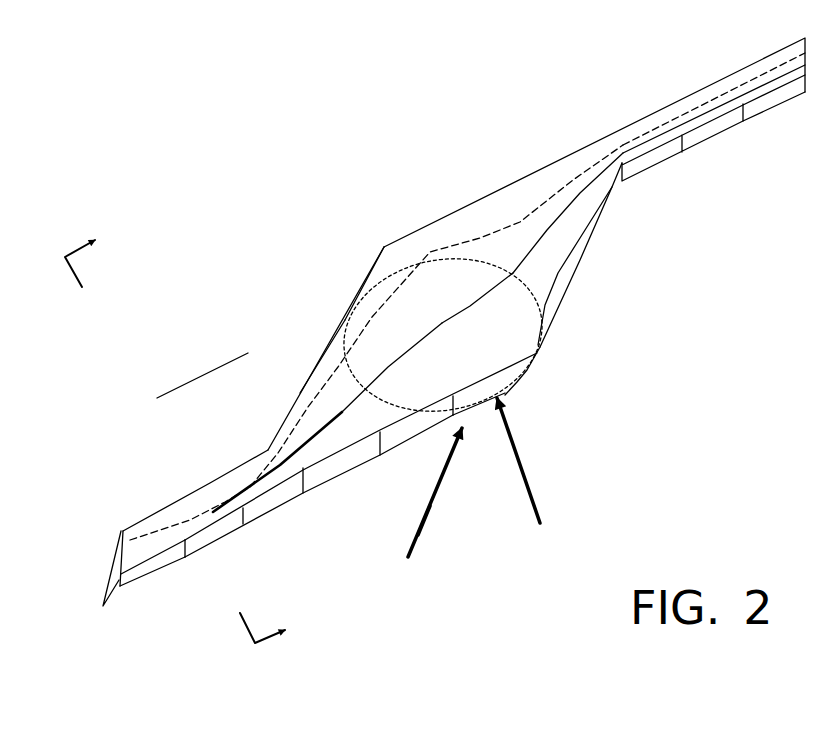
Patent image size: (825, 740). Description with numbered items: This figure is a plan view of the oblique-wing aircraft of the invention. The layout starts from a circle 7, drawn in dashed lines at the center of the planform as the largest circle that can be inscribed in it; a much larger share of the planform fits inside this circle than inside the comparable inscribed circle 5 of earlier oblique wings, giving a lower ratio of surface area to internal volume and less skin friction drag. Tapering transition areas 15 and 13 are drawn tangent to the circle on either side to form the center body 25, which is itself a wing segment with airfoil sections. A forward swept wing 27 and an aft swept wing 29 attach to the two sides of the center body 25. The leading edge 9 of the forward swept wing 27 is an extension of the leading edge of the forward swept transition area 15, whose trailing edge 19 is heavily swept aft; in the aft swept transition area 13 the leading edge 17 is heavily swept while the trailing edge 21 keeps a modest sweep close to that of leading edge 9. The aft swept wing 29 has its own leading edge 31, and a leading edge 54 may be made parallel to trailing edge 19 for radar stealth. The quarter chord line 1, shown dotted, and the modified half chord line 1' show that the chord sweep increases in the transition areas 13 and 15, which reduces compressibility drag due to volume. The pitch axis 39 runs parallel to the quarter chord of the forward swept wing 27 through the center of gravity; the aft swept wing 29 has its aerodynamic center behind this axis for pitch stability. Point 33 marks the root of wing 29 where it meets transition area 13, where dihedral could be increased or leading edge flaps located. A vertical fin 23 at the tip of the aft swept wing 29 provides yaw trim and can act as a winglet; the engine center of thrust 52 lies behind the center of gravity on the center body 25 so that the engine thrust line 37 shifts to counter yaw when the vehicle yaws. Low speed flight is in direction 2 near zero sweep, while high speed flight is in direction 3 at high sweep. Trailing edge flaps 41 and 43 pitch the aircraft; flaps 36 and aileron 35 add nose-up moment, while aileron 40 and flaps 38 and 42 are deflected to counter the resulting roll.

The quarter chord line 1 is at (518, 237).
The modified half chord line 1' is at (477, 240).
The low speed direction 2 is at (542, 518).
The high speed flight direction 3 is at (436, 503).
The largest circle possible 5 is at (187, 437).
The circle 7 is at (548, 307).
The leading edge of forward swept wing 9 is at (540, 160).
The aft swept transition area 13 is at (322, 354).
The forward swept transition area 15 is at (557, 222).
The leading edge of aft swept transition area 17 is at (342, 318).
The trailing edge of forward swept transition area 19 is at (553, 332).
The trailing edge of aft swept transition area 21 is at (320, 494).
The vertical fin 23 is at (112, 575).
The center body 25 is at (428, 293).
The forward swept wing 27 is at (698, 105).
The aft swept wing 29 is at (190, 521).
The leading edge of aft swept wing 31 is at (213, 483).
The root point of aft swept wing 33 is at (277, 456).
The aileron 35 is at (152, 588).
The inboard flap 36 is at (267, 510).
The engine thrust line 37 is at (422, 542).
The flaps 38 is at (716, 128).
The pitch axis 39 is at (178, 378).
The aileron 40 is at (768, 104).
The trailing edge flap 41 is at (400, 437).
The flap 42 is at (582, 258).
The trailing edge flap 43 is at (507, 387).
The center of thrust 52 is at (483, 357).
The leading edge 54 is at (320, 350).